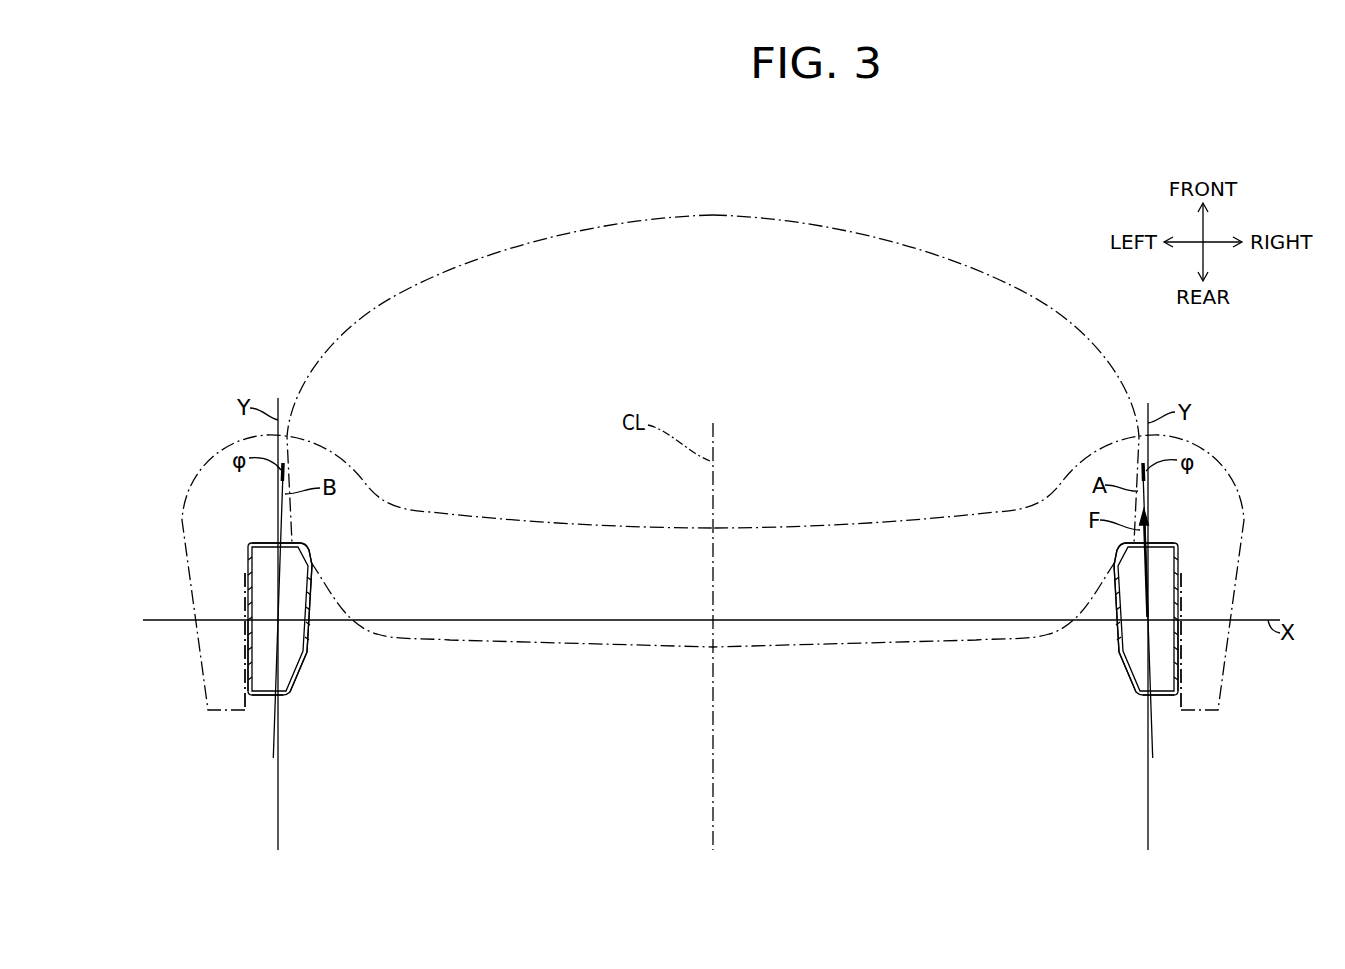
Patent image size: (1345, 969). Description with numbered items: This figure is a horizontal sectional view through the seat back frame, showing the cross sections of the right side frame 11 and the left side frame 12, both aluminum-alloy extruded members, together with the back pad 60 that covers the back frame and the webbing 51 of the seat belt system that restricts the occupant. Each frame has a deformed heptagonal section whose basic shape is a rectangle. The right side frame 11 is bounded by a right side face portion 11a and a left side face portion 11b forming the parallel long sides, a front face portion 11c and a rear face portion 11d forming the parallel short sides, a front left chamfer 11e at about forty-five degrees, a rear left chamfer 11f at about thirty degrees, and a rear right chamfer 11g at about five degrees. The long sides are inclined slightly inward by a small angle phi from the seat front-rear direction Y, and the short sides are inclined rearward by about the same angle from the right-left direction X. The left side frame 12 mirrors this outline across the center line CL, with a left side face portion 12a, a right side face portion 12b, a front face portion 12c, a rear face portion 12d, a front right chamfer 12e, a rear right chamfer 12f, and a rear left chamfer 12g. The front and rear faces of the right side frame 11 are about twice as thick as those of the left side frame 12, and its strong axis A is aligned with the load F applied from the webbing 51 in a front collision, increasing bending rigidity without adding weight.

The right side frame 11 is at (1180, 572).
The right side face portion 11a is at (1182, 600).
The left side face portion 11b is at (1115, 605).
The front face portion 11c is at (1162, 545).
The rear face portion 11d is at (1160, 697).
The front left chamfer 11e is at (1120, 551).
The rear left chamfer 11f is at (1132, 684).
The rear right chamfer 11g is at (1183, 660).
The left side frame 12 is at (248, 572).
The left side face portion 12a is at (245, 601).
The right side face portion 12b is at (312, 592).
The front face portion 12c is at (270, 543).
The rear face portion 12d is at (267, 697).
The front right chamfer 12e is at (302, 546).
The rear right chamfer 12f is at (300, 684).
The rear left chamfer 12g is at (246, 660).
The webbing 51 is at (992, 270).
The back pad 60 is at (1222, 458).